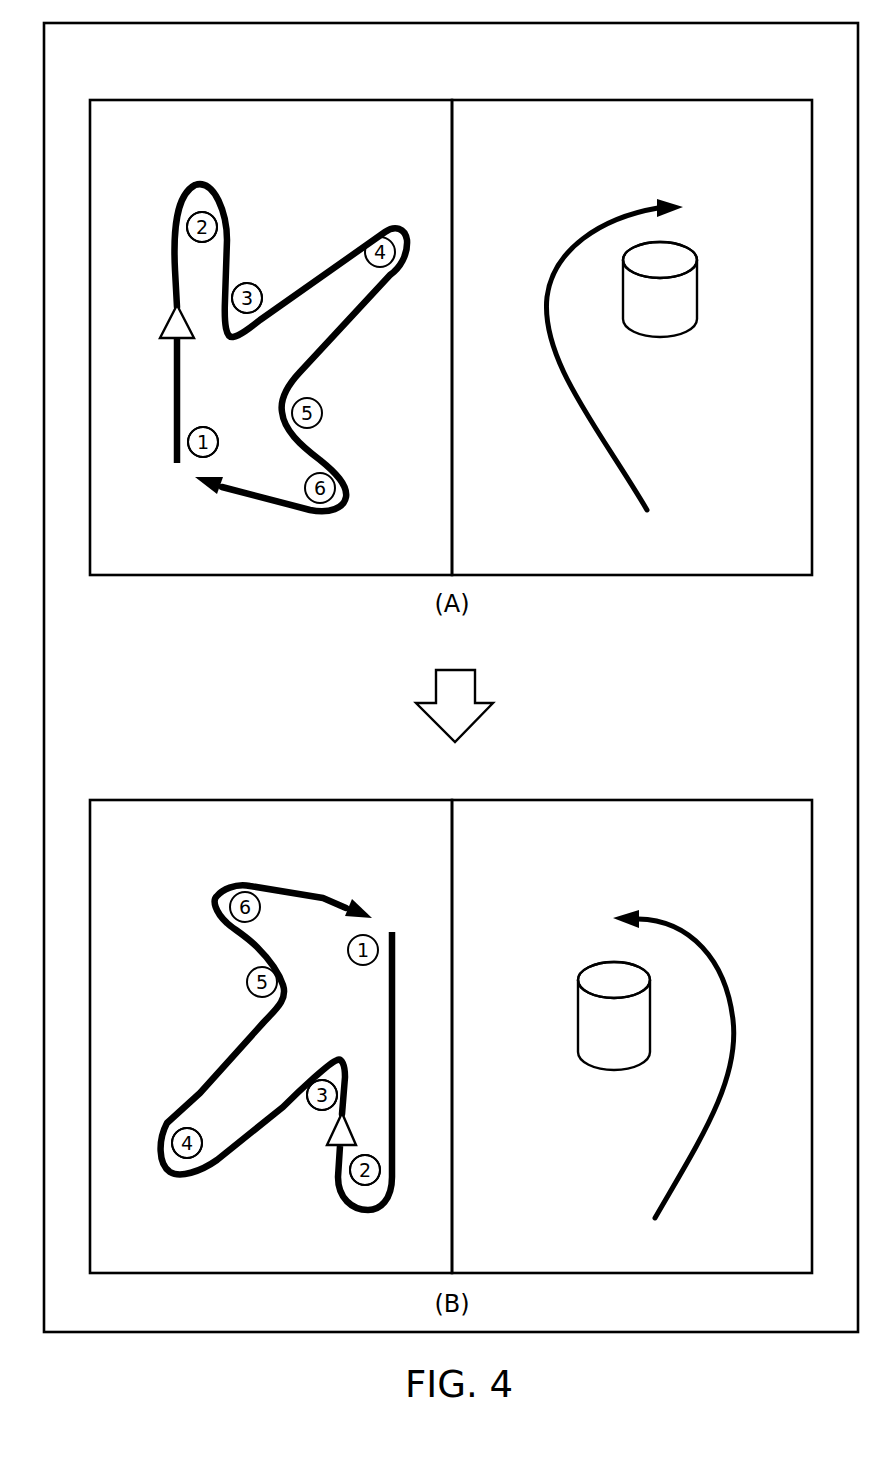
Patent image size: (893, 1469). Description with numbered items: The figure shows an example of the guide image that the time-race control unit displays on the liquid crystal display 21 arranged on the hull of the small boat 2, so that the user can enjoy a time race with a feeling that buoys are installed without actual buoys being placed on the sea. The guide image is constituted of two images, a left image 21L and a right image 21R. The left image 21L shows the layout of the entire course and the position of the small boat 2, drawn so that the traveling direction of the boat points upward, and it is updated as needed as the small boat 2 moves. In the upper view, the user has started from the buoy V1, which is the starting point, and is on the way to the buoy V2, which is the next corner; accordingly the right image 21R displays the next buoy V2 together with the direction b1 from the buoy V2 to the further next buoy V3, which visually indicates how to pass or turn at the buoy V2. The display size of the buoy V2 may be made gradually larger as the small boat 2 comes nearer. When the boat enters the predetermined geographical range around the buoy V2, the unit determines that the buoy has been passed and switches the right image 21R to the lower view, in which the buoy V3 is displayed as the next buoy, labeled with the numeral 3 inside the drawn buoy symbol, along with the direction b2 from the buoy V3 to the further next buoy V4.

The liquid crystal display 21 is at (722, 80).
The left image 21L is at (128, 100).
The right image 21R is at (514, 100).
The small boat 2 is at (160, 322).
The object 3 is at (614, 1016).
The buoy V1 is at (212, 428).
The buoy V2 is at (200, 243).
The buoy V3 is at (254, 284).
The buoy V4 is at (200, 1130).
The direction b1 is at (562, 240).
The direction b2 is at (712, 940).